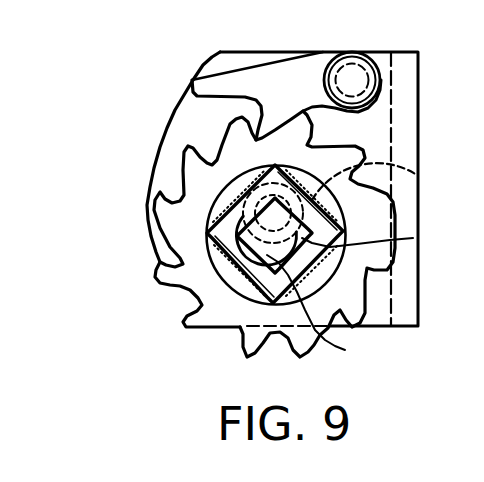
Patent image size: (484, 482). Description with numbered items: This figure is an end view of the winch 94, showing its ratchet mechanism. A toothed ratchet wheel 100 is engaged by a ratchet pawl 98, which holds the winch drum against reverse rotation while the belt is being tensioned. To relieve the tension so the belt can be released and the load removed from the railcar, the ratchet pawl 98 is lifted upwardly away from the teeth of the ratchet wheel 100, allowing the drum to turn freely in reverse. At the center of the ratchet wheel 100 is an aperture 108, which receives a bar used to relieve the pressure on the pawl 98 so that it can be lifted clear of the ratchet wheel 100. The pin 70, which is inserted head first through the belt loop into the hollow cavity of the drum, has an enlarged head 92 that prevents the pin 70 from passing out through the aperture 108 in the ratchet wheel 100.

The winch 94 is at (133, 114).
The ratchet pawl 98 is at (233, 80).
The pin 70 is at (419, 174).
The enlarged head 92 is at (413, 238).
The ratchet wheel 100 is at (180, 328).
The aperture 108 is at (316, 274).